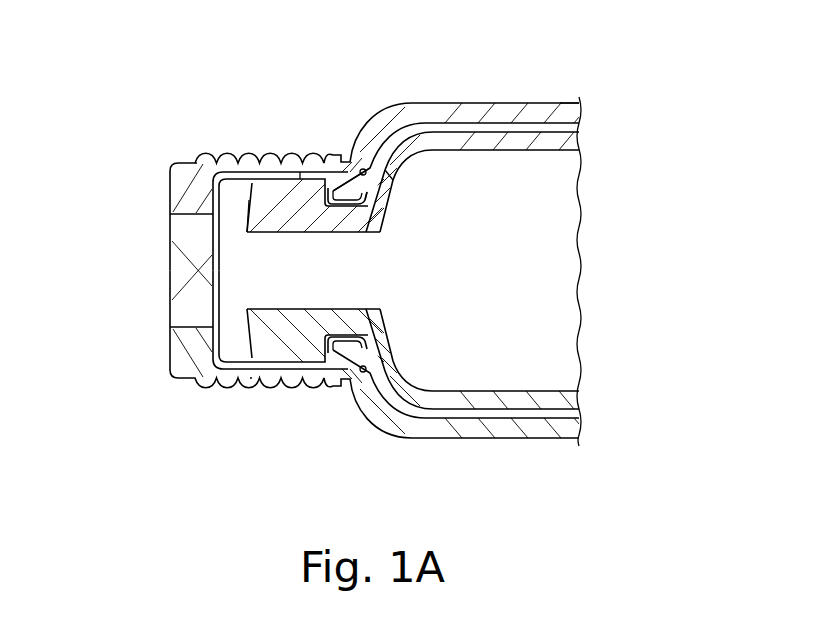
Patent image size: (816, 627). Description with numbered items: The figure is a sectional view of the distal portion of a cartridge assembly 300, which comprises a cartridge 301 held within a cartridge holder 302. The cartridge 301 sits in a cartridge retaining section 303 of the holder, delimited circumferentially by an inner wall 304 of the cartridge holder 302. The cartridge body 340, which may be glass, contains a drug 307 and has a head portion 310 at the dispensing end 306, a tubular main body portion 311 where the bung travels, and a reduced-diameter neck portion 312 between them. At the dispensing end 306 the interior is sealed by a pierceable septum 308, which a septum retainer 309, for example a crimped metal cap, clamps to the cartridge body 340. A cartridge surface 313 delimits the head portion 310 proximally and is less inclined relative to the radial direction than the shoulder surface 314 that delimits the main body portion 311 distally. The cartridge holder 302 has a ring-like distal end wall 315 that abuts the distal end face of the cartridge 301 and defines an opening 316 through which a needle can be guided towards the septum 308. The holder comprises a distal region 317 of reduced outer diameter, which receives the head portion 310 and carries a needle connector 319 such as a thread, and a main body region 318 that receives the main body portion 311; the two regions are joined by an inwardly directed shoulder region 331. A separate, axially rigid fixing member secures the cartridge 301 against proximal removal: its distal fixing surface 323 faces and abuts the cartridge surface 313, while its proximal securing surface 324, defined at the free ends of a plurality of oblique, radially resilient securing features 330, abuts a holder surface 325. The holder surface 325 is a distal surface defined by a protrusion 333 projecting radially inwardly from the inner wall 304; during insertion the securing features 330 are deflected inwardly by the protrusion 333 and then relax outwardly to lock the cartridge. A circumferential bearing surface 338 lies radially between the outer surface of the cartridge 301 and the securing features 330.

The cartridge assembly 300 is at (318, 121).
The cartridge 301 is at (573, 137).
The cartridge holder 302 is at (552, 115).
The cartridge retaining section 303 is at (505, 113).
The inner wall 304 is at (408, 405).
The dispensing end 306 is at (208, 284).
The drug 307 is at (560, 317).
The septum 308 is at (244, 168).
The septum retainer 309 is at (314, 168).
The head portion 310 is at (262, 388).
The main body portion 311 is at (492, 402).
The neck portion 312 is at (305, 388).
The cartridge surface 313 is at (348, 158).
The shoulder surface 314 is at (396, 160).
The distal end wall 315 is at (185, 177).
The opening 316 is at (183, 222).
The distal region 317 is at (198, 160).
The main body region 318 is at (560, 113).
The needle connector 319 is at (228, 158).
The fixing surface 323 is at (250, 236).
The securing surface 324 is at (364, 169).
The holder surface 325 is at (372, 200).
The securing features 330 is at (362, 204).
The shoulder region 331 is at (353, 400).
The protrusion 333 is at (372, 176).
The bearing surface 338 is at (357, 233).
The cartridge body 340 is at (578, 397).